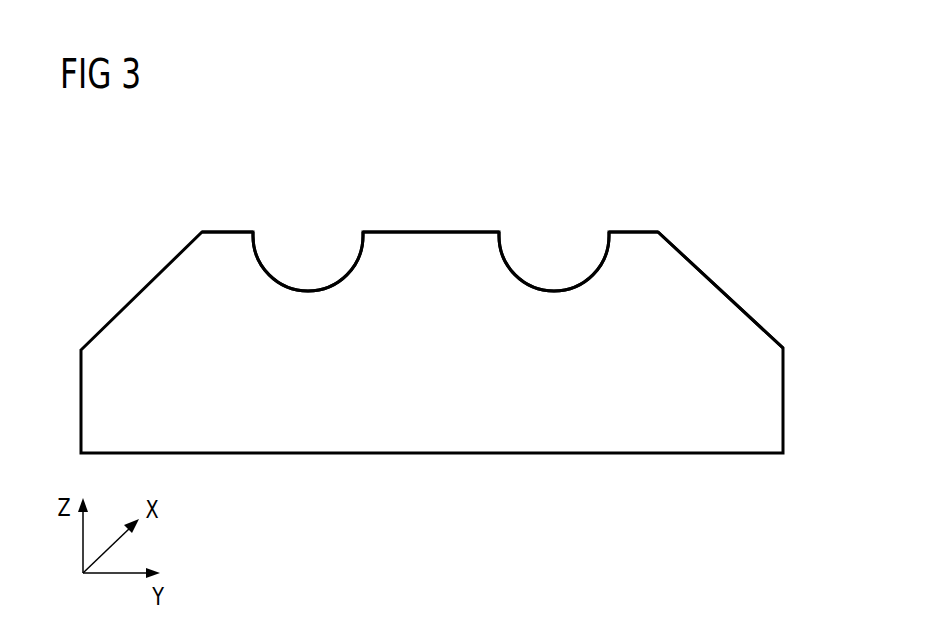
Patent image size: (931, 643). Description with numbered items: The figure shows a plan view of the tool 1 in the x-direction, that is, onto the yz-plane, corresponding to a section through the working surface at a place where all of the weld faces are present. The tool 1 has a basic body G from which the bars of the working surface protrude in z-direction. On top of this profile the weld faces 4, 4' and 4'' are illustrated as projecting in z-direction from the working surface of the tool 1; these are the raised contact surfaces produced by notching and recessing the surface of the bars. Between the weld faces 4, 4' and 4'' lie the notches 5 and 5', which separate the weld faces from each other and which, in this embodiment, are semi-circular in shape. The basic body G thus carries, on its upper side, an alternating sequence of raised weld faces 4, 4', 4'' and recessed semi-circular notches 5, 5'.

The tool 1 is at (116, 148).
The weld face 4 is at (227, 203).
The weld face 4' is at (633, 194).
The weld face 4'' is at (431, 194).
The notch 5 is at (308, 241).
The notch 5' is at (554, 239).
The basic body G is at (722, 305).